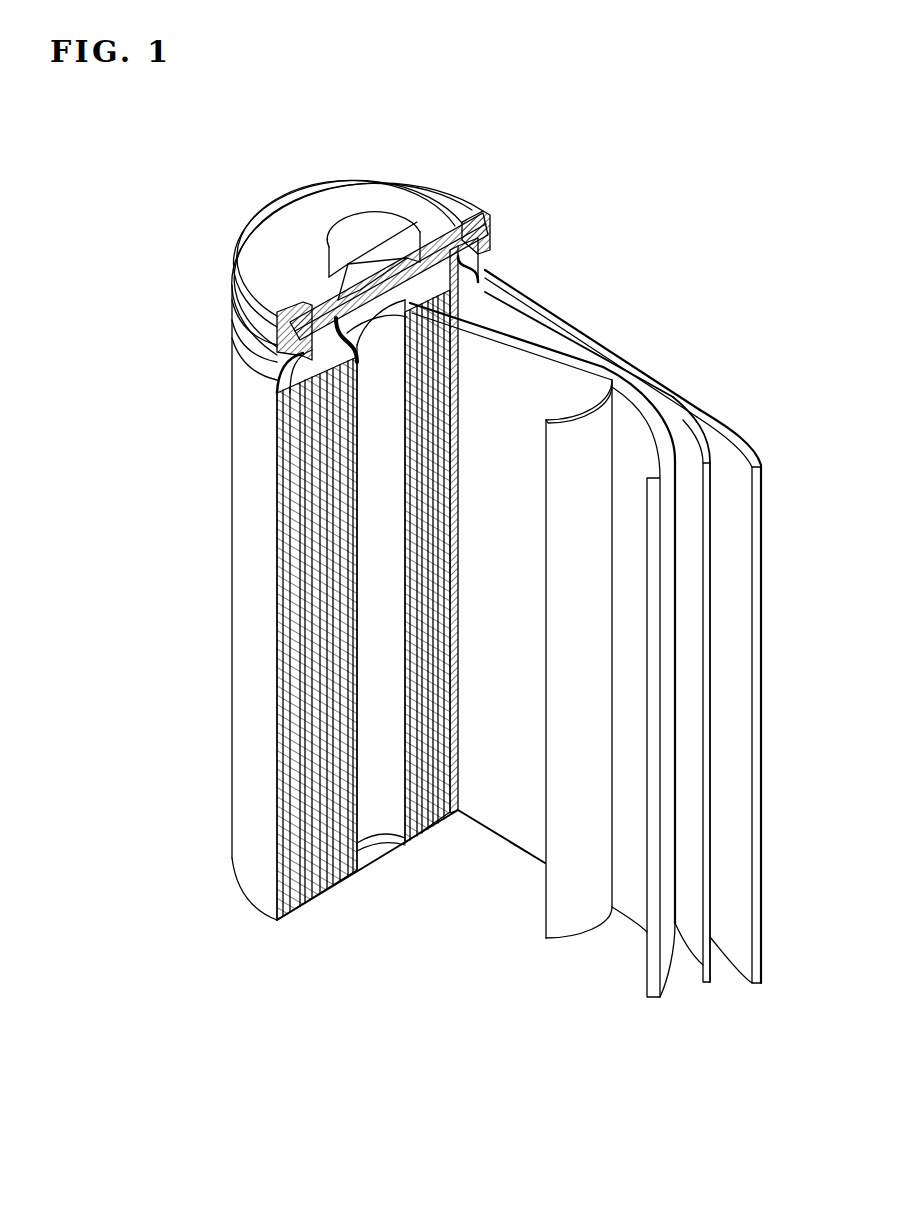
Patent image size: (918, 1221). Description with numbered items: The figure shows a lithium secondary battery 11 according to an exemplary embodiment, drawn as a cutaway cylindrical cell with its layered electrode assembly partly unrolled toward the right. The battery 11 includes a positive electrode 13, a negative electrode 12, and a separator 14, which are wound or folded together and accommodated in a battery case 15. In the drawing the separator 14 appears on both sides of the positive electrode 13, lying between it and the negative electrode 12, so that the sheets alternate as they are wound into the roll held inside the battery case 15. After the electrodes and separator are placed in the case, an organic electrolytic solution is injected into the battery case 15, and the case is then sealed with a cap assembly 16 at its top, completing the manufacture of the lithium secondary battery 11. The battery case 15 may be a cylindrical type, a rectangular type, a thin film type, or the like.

The lithium secondary battery 11 is at (411, 533).
The negative electrode 12 is at (747, 443).
The positive electrode 13 is at (637, 397).
The separator 14 is at (577, 422).
The battery case 15 is at (243, 598).
The cap assembly 16 is at (355, 228).